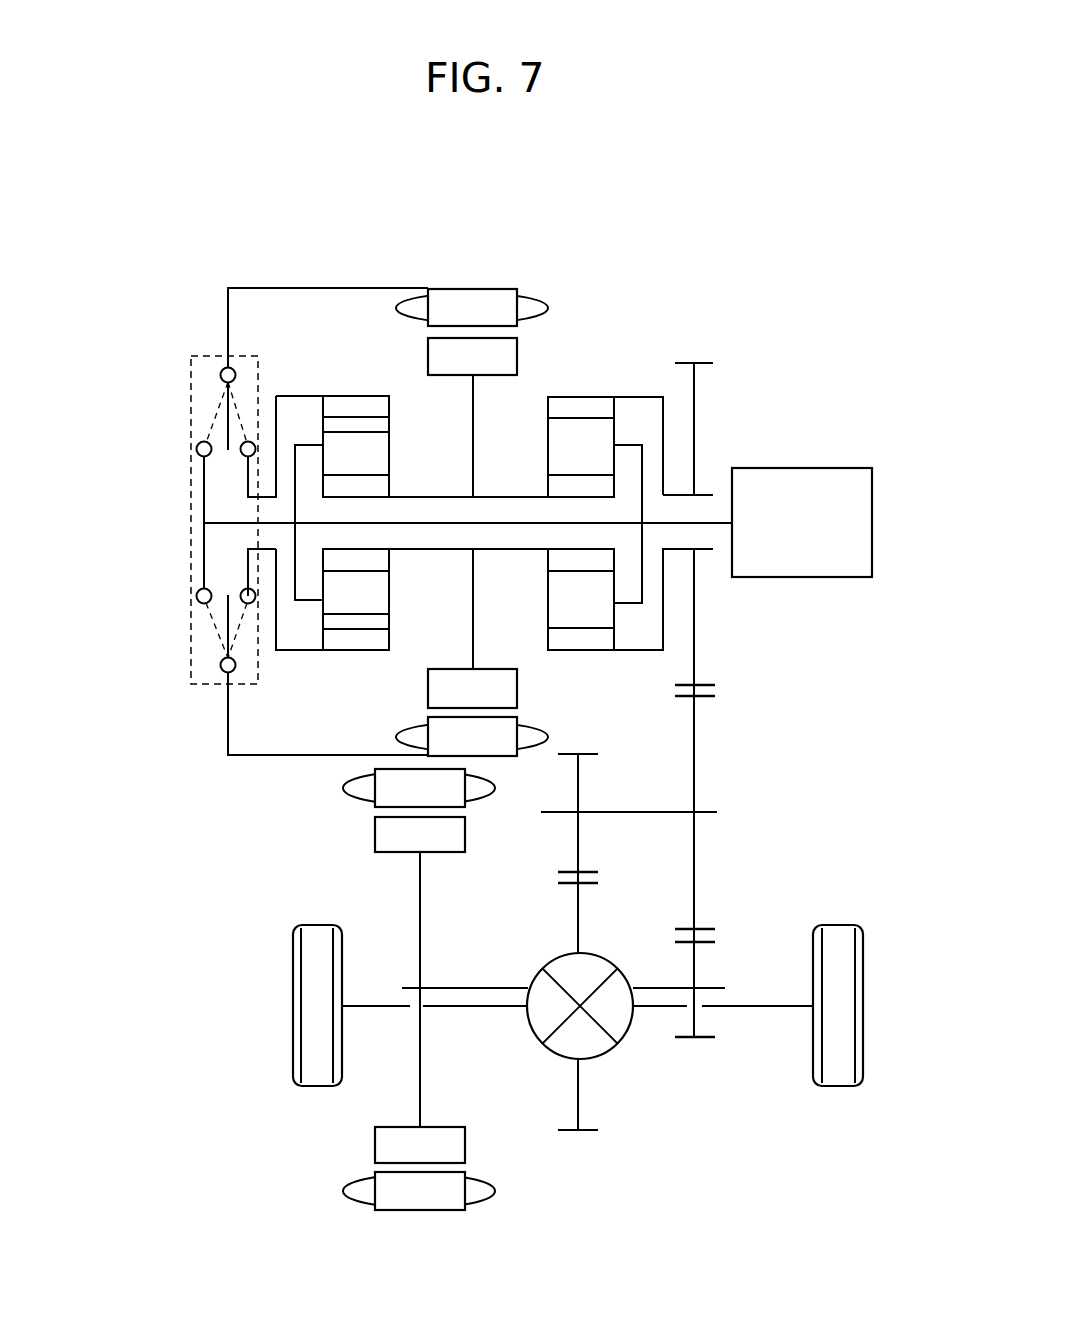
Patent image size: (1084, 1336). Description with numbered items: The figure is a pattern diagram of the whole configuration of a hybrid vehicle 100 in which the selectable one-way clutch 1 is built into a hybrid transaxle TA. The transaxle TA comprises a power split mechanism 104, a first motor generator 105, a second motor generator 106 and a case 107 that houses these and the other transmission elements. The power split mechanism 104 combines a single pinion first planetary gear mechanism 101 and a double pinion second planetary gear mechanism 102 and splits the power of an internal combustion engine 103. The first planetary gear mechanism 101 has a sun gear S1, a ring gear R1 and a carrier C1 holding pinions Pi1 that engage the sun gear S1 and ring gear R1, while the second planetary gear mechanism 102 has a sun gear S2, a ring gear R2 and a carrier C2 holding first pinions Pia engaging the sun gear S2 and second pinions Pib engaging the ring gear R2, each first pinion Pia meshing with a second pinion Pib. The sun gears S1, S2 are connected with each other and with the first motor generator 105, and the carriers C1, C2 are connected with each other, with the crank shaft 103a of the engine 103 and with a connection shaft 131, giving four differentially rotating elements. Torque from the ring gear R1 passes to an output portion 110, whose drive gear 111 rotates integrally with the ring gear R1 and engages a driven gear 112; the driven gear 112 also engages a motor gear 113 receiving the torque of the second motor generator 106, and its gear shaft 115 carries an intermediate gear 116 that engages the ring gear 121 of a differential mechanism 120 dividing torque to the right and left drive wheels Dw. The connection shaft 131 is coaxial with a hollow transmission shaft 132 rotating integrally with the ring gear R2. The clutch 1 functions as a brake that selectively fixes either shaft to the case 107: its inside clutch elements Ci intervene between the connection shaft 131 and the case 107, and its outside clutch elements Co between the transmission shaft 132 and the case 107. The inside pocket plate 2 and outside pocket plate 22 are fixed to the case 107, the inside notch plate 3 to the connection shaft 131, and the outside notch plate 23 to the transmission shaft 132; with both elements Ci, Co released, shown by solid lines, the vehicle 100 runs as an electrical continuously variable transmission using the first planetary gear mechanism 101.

The hybrid vehicle 100 is at (548, 171).
The clutch 1 is at (200, 355).
The inside pocket plate 2 is at (160, 634).
The outside pocket plate 22 is at (227, 625).
The inside notch plate 3 is at (202, 545).
The outside notch plate 23 is at (248, 560).
The inside clutch elements Ci is at (190, 440).
The outside clutch elements Co is at (235, 458).
The first planetary gear mechanism 101 is at (573, 385).
The second planetary gear mechanism 102 is at (357, 388).
The internal combustion engine 103 is at (790, 478).
The crank shaft 103a is at (718, 522).
The power split mechanism 104 is at (626, 364).
The first motor generator 105 is at (465, 288).
The second motor generator 106 is at (342, 788).
The case 107 is at (287, 288).
The output portion 110 is at (718, 637).
The drive gear 111 is at (697, 388).
The driven gear 112 is at (697, 756).
The motor gear 113 is at (698, 969).
The gear shaft 115 is at (655, 812).
The intermediate gear 116 is at (578, 840).
The differential mechanism 120 is at (557, 965).
The ring gear 121 is at (577, 908).
The connection shaft 131 is at (442, 525).
The transmission shaft 132 is at (263, 552).
The hybrid transaxle TA is at (576, 307).
The ring gear R1 is at (568, 399).
The sun gear S1 is at (562, 483).
The carrier C1 is at (628, 444).
The pinions Pi1 is at (562, 432).
The ring gear R2 is at (380, 399).
The sun gear S2 is at (386, 483).
The carrier C2 is at (310, 444).
The first pinions Pia is at (389, 452).
The second pinions Pib is at (389, 423).
The drive wheels Dw is at (305, 968).